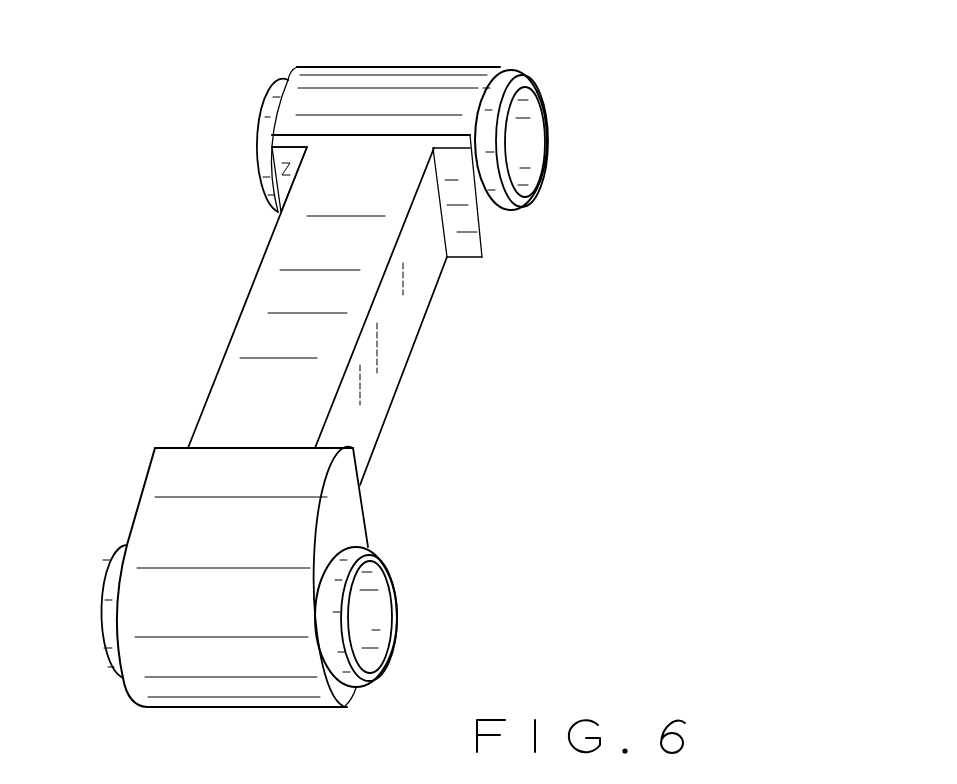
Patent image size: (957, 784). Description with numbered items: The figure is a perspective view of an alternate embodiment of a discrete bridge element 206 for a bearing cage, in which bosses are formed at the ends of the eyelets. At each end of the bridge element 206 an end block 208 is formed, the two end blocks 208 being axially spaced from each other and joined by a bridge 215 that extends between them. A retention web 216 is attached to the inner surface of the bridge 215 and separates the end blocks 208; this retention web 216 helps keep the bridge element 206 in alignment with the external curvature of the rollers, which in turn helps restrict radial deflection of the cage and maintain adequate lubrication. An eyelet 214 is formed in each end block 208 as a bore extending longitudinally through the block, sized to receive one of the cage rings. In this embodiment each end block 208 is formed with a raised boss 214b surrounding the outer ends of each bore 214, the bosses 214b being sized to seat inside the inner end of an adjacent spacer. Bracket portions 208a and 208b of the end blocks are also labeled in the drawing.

The bridge element 206 is at (222, 292).
The end block 208 is at (388, 67).
The first bracket of housing 208a is at (283, 168).
The second bracket of housing 208b is at (465, 233).
The eyelet 214 is at (525, 148).
The raised boss 214b is at (260, 140).
The bridge 215 is at (286, 329).
The retention web 216 is at (378, 373).